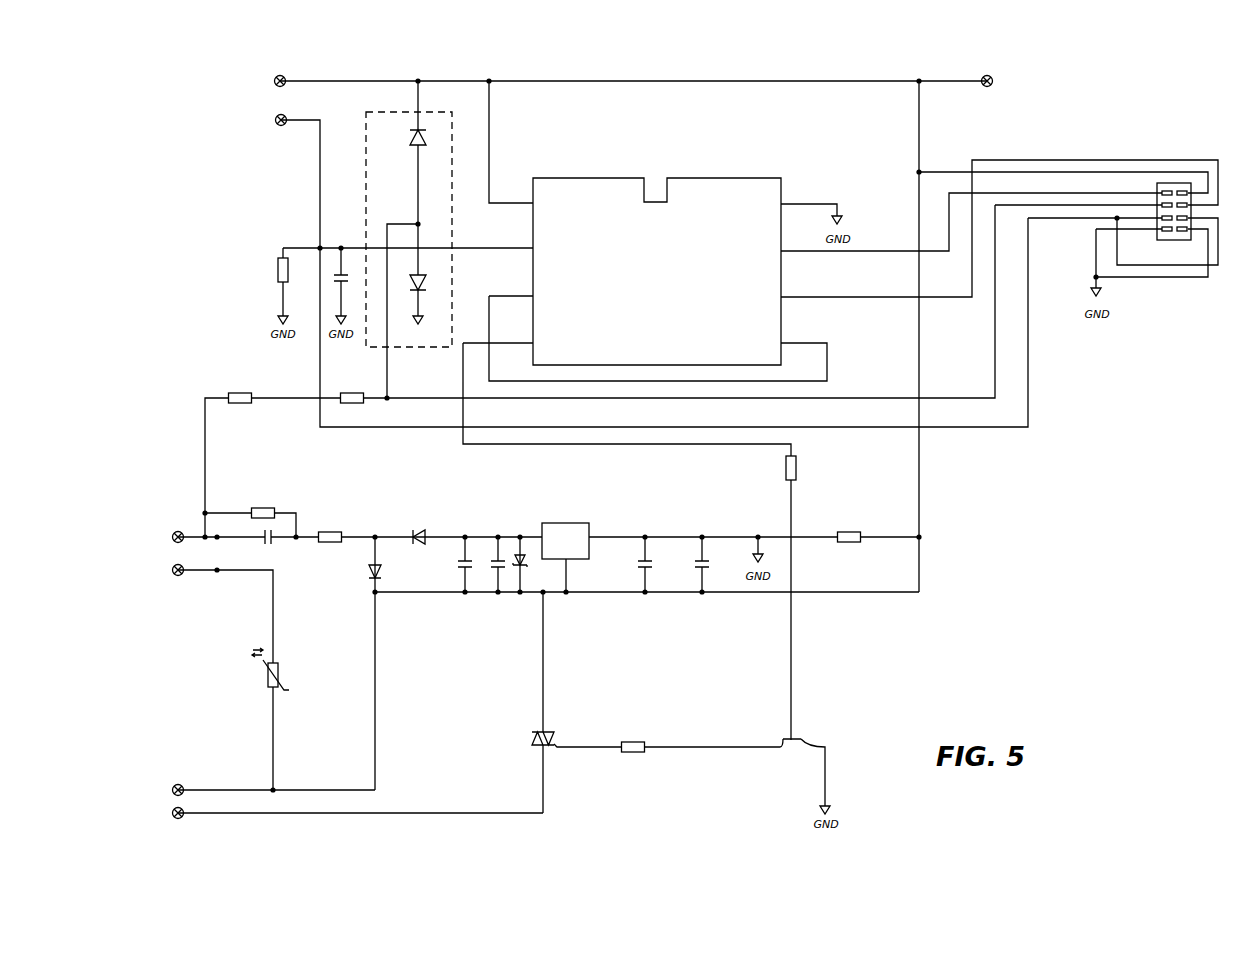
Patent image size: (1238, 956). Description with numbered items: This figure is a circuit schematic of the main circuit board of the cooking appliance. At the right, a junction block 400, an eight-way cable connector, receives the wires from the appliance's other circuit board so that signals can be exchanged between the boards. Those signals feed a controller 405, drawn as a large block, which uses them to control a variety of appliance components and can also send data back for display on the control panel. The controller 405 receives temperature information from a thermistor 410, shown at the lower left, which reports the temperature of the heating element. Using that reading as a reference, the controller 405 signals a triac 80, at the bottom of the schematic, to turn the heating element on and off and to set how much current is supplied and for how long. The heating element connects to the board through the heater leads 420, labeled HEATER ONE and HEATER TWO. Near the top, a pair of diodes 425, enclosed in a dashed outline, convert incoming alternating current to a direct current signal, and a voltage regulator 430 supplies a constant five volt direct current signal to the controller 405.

The junction block 400 is at (1178, 243).
The controller 405 is at (683, 206).
The thermistor 410 is at (263, 680).
The heater leads 420 is at (172, 567).
The diodes D4 and D5 425 is at (452, 128).
The voltage regulator 430 is at (553, 523).
The triac 80 is at (535, 736).